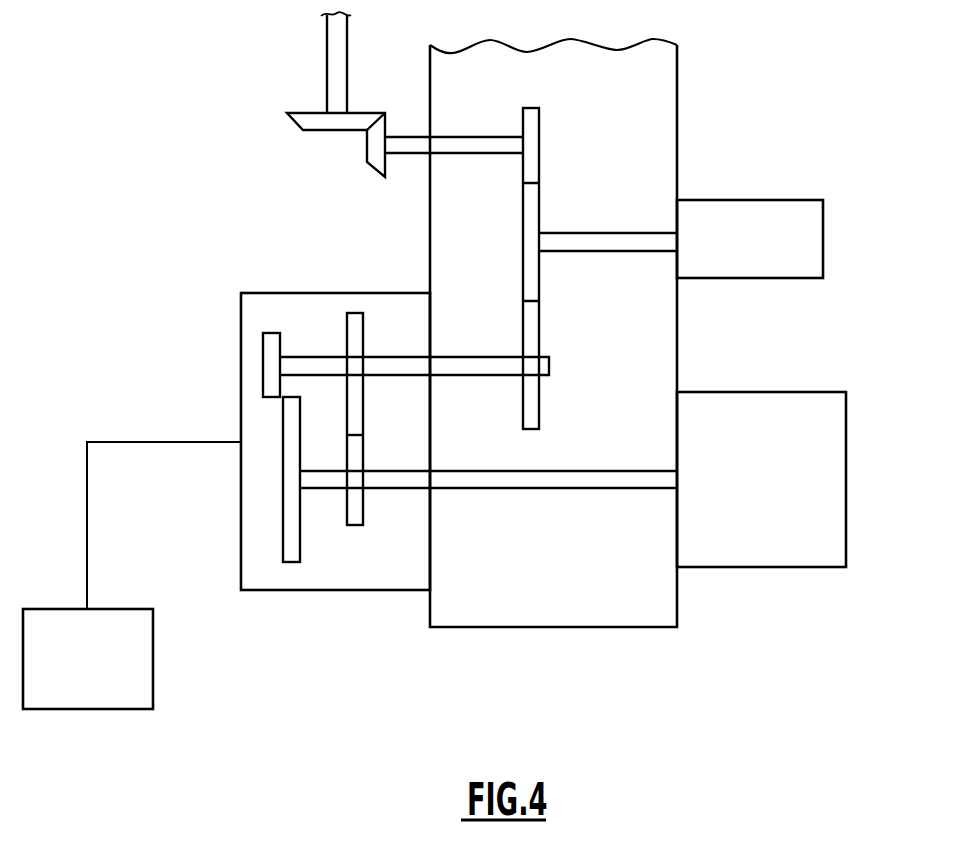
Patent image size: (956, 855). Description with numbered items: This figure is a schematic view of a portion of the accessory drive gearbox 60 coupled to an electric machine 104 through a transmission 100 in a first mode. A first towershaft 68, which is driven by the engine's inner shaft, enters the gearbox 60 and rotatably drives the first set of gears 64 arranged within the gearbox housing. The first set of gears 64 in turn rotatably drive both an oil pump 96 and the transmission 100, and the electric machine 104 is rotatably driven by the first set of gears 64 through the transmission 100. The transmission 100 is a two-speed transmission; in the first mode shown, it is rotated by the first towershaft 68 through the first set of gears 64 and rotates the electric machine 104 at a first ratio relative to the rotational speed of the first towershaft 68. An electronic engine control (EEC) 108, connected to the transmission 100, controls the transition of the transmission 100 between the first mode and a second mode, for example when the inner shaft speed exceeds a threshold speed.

The accessory drive gearbox 60 is at (677, 600).
The first set of gears 64 is at (507, 260).
The first towershaft 68 is at (327, 62).
The oil pump 96 is at (823, 234).
The transmission 100 is at (342, 590).
The electric machine 104 is at (846, 531).
The electronic engine control (EEC) 108 is at (66, 688).